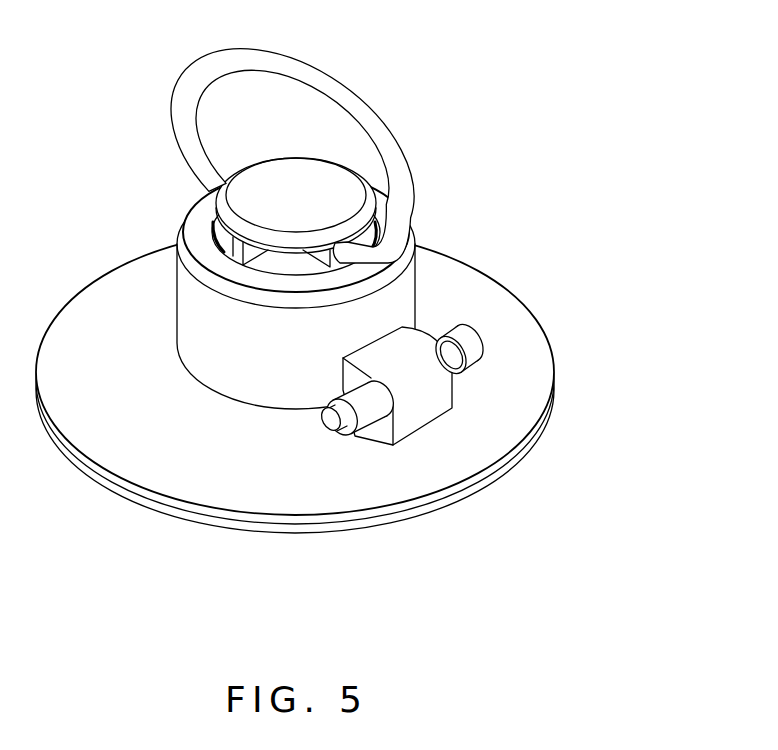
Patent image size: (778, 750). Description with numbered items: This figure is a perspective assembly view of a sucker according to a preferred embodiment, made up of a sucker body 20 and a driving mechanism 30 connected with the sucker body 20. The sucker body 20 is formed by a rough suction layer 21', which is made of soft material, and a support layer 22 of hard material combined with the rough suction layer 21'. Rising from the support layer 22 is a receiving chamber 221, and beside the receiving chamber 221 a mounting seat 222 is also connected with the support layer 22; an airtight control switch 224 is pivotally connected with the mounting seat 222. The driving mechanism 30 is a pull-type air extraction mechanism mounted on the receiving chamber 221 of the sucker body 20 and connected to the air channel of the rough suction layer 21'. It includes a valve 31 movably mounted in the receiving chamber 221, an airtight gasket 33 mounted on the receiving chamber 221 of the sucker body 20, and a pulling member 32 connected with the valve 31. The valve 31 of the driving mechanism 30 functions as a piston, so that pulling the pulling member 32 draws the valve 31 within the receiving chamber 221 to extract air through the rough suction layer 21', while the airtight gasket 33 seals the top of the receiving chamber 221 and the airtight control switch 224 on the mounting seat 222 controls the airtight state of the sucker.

The sucker body 20 is at (347, 356).
The rough suction layer 21' is at (315, 385).
The support layer 22 is at (521, 372).
The receiving chamber 221 is at (207, 321).
The mounting seat 222 is at (414, 362).
The airtight control switch 224 is at (470, 345).
The driving mechanism 30 is at (248, 154).
The valve 31 is at (236, 252).
The pulling member 32 is at (294, 73).
The airtight gasket 33 is at (187, 258).